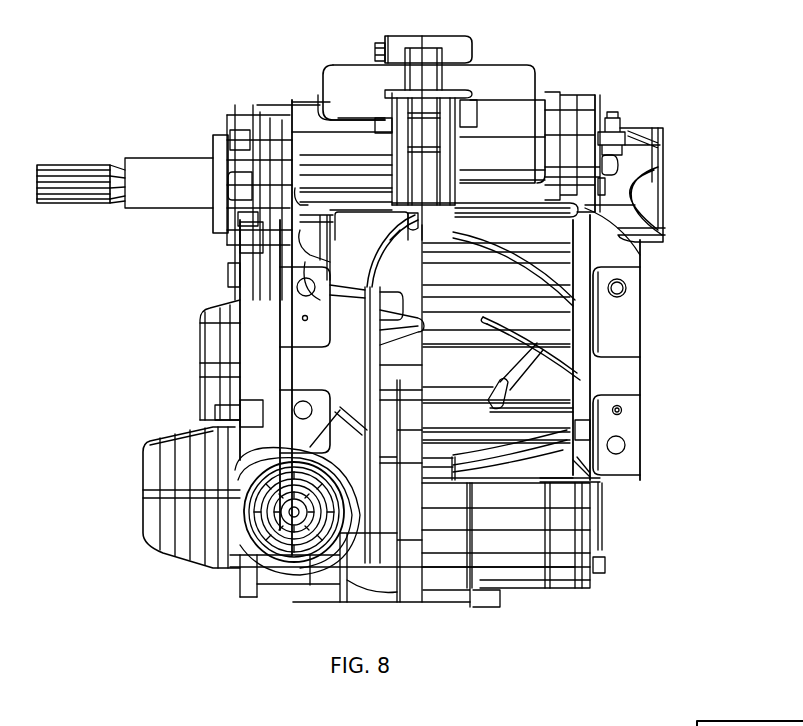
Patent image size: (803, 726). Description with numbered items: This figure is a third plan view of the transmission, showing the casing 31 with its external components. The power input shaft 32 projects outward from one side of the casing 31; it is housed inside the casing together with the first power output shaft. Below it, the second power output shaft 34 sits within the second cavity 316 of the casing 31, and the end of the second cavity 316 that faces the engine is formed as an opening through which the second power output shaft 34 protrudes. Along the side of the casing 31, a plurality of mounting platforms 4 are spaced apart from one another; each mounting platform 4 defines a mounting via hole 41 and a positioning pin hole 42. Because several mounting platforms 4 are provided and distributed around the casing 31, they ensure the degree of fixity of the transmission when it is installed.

The casing 31 is at (502, 88).
The power input shaft 32 is at (102, 207).
The second cavity 316 is at (253, 527).
The second power output shaft 34 is at (293, 518).
The mounting platform 4 is at (627, 425).
The mounting via hole 41 is at (627, 292).
The positioning pin hole 42 is at (620, 410).